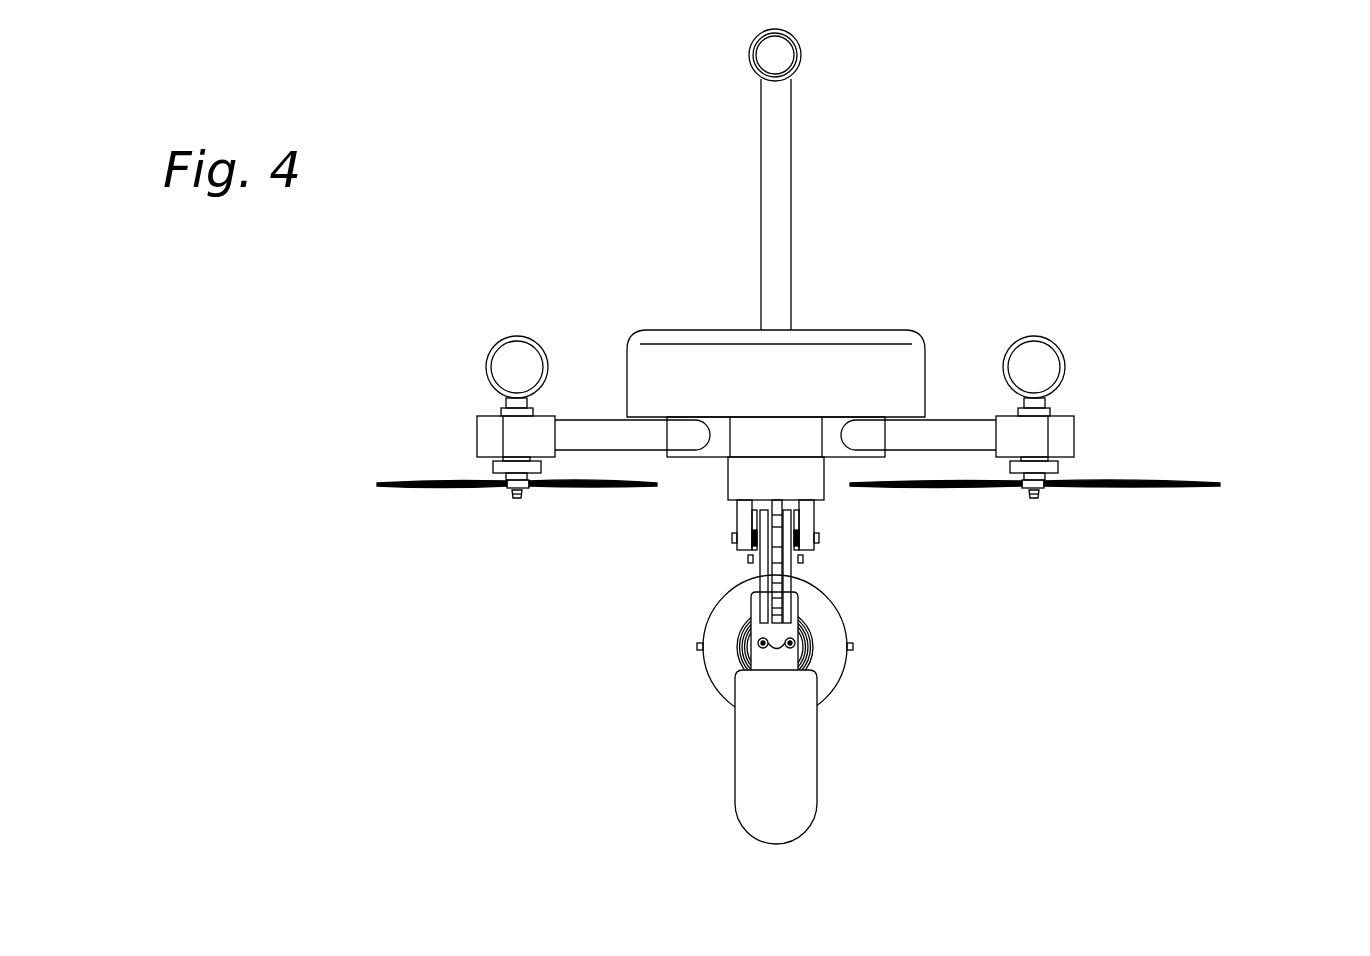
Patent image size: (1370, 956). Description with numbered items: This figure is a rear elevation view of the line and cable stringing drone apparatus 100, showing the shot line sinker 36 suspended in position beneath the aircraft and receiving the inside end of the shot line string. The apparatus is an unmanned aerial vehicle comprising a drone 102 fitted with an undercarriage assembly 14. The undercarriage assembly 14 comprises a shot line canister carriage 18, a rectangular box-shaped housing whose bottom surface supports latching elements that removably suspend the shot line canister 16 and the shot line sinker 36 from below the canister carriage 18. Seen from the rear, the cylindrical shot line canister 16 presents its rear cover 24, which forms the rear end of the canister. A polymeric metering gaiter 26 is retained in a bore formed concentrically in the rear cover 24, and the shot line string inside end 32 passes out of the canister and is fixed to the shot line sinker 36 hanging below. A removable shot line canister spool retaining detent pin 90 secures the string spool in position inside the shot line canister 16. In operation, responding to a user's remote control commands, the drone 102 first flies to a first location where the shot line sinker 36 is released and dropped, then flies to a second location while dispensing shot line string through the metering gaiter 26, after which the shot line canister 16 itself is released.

The line and cable stringing drone apparatus 100 is at (1242, 129).
The drone 102 is at (856, 330).
The undercarriage assembly 14 is at (728, 482).
The shot line canister carriage 18 is at (820, 500).
The rear cover 24 is at (823, 610).
The polymeric metering gaiter 26 is at (743, 625).
The shot line canister spool retaining detent pin 90 is at (853, 643).
The shot line canister 16 is at (715, 680).
The shot line string inside end 32 is at (776, 651).
The shot line sinker 36 is at (735, 763).